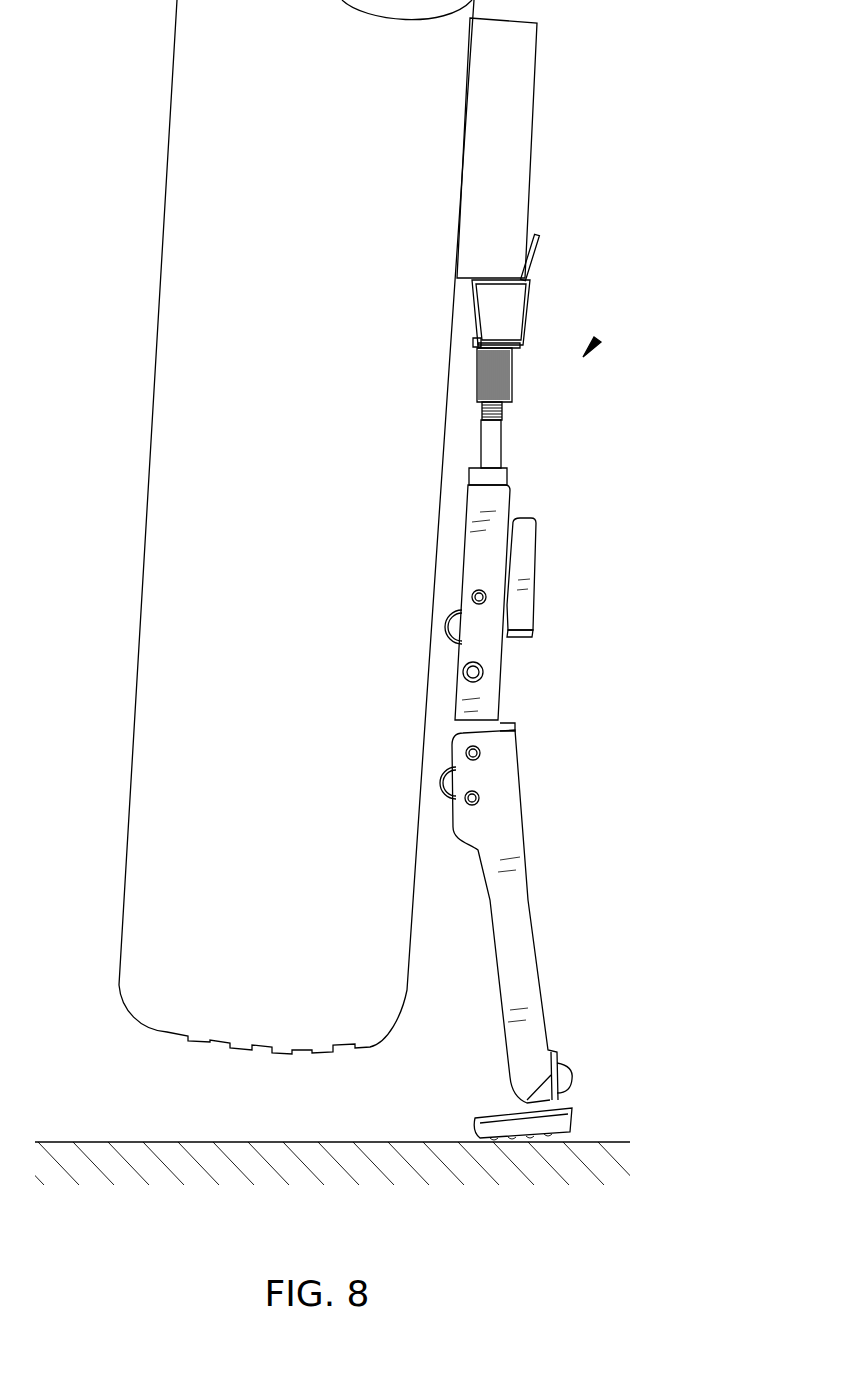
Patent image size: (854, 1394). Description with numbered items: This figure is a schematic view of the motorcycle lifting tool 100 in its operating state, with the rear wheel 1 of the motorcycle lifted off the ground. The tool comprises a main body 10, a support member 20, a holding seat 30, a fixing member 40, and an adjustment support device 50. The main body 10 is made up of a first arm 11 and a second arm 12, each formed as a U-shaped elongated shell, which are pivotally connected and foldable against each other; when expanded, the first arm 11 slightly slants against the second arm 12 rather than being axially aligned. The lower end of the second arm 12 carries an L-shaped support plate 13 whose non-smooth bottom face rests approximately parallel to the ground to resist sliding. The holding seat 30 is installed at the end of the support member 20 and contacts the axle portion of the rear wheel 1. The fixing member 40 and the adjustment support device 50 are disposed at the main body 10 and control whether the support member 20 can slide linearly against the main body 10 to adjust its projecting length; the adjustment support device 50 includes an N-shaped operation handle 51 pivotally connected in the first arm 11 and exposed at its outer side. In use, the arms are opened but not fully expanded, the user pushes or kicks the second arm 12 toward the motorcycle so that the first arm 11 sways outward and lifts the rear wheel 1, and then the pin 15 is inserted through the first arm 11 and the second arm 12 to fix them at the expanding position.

The rear wheel 1 is at (172, 533).
The motorcycle lifting tool 100 is at (598, 340).
The main body 10 is at (594, 804).
The first arm 11 is at (500, 493).
The second arm 12 is at (507, 830).
The support plate 13 is at (577, 975).
The pin 15 is at (448, 803).
The support member 20 is at (502, 416).
The holding seat 30 is at (513, 310).
The fixing member 40 is at (447, 627).
The adjustment support device 50 is at (510, 622).
The operation handle 51 is at (525, 543).